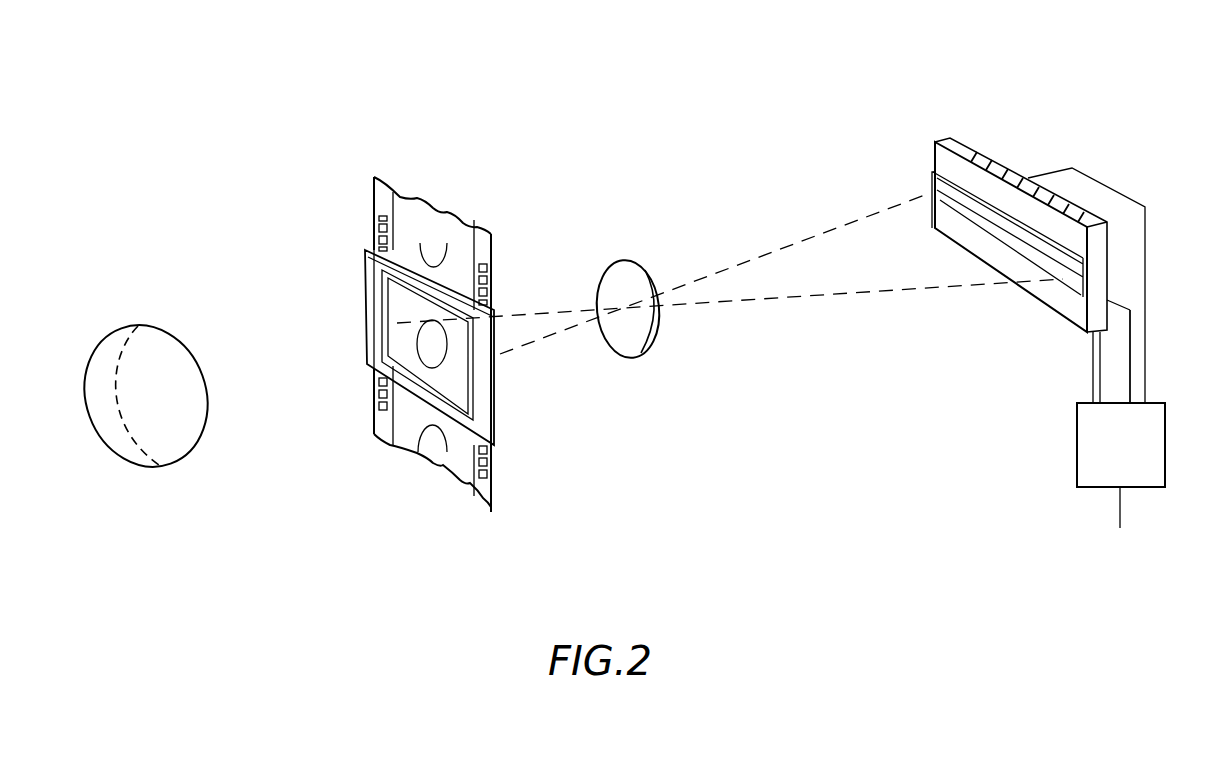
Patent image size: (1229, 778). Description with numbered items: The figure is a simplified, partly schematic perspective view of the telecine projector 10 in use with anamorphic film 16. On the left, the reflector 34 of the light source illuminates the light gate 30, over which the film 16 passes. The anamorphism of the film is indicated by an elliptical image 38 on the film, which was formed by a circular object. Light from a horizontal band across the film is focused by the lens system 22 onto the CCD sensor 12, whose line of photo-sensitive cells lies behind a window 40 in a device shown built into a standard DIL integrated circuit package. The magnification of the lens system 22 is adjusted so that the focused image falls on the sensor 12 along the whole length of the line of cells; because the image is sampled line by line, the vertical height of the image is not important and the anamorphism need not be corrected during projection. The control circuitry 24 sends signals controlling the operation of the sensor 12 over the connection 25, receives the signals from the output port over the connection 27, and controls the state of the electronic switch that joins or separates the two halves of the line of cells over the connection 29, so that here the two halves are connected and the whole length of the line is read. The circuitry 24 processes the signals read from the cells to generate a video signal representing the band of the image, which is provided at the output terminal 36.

The telecine projector 10 is at (598, 100).
The CCD sensor 12 is at (899, 145).
The film 16 is at (380, 408).
The lens system 22 is at (620, 272).
The control circuitry 24 is at (1093, 433).
The connection 25 is at (1092, 366).
The connection 27 is at (1133, 343).
The connection 29 is at (1108, 188).
The light gate 30 is at (372, 275).
The reflector 34 is at (110, 453).
The output terminal 36 is at (1117, 508).
The elliptical image 38 is at (428, 341).
The window 40 is at (942, 182).